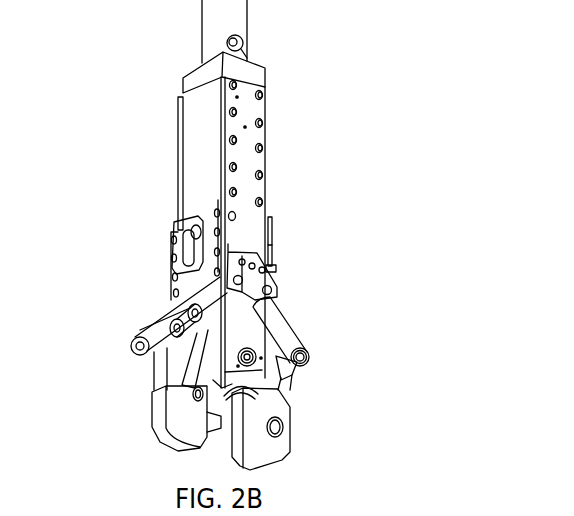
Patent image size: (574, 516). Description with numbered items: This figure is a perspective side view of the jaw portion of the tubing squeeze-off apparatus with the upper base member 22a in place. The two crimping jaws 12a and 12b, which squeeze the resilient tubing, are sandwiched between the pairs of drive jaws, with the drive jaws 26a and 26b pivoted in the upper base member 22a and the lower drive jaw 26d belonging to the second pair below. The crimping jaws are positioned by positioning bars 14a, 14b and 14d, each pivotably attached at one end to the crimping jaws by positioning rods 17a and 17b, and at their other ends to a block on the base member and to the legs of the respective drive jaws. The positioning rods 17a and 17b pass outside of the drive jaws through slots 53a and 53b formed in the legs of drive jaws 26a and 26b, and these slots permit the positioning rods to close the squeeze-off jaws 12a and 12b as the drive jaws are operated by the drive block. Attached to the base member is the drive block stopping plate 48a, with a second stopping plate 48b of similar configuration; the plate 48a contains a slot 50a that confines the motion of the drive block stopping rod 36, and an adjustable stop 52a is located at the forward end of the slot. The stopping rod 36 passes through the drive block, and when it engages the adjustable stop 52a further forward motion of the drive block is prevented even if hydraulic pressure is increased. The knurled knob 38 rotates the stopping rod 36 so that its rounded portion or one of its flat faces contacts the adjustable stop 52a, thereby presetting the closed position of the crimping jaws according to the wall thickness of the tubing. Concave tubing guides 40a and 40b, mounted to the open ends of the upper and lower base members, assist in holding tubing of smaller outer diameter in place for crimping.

The upper base member 22a is at (248, 163).
The drive block stopping plate 48a is at (177, 227).
The drive block stopping plate 48b is at (272, 208).
The knurled knob 38 is at (278, 238).
The drive block stopping rod 36 is at (183, 218).
The slot 50a is at (193, 237).
The adjustable stop 52a is at (187, 257).
The positioning bar 14a is at (200, 293).
The positioning bar 14d is at (138, 328).
The crimping jaw 12a is at (130, 343).
The drive jaw 26a is at (183, 340).
The positioning rod 17a is at (160, 348).
The slot 53a is at (202, 334).
The drive jaw 26d is at (148, 412).
The concave tubing guide 40b is at (212, 420).
The positioning bar 14b is at (282, 313).
The slot 53b is at (283, 352).
The positioning rod 17b is at (293, 373).
The crimping jaw 12b is at (290, 393).
The drive jaw 26b is at (273, 448).
The concave tubing guide 40a is at (283, 420).